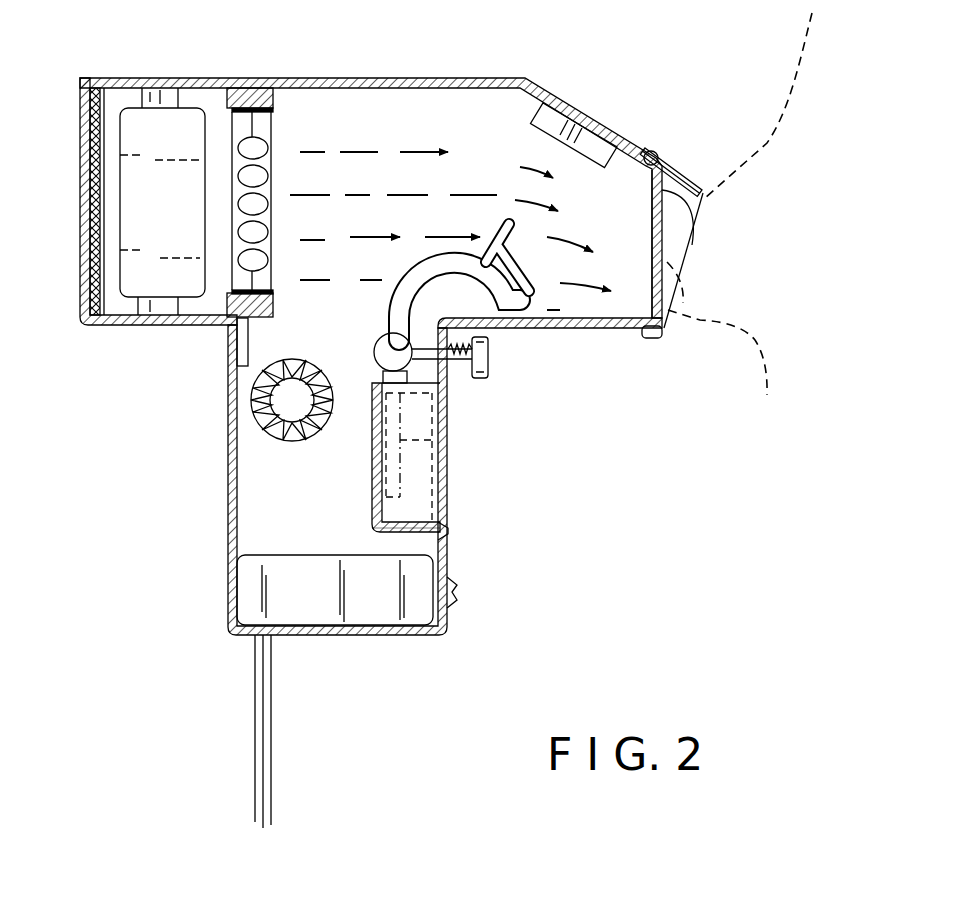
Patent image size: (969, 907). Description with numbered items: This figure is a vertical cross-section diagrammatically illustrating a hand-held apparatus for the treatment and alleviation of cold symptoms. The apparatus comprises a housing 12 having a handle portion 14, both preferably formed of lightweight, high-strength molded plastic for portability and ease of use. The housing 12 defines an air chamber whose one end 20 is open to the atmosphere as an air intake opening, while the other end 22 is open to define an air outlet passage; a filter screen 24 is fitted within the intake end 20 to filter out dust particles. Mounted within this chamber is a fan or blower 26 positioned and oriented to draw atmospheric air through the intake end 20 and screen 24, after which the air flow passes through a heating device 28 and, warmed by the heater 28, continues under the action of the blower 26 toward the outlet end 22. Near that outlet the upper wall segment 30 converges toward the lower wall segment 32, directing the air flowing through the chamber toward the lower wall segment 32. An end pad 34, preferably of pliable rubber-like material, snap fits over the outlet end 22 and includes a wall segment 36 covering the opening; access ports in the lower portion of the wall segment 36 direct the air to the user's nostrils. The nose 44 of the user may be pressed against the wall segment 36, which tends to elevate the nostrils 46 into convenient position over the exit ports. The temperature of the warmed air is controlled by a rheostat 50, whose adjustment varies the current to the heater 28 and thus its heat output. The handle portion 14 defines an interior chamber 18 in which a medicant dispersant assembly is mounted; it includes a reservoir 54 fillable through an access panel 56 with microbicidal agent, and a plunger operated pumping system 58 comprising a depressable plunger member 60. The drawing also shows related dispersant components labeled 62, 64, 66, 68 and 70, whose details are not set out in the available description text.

The housing 12 is at (440, 80).
The handle portion 14 is at (228, 508).
The interior chamber 18 is at (309, 490).
The end of chamber 20 is at (80, 130).
The other end of chamber 22 is at (705, 207).
The filter screen 24 is at (93, 187).
The fan or blower 26 is at (188, 128).
The heating device 28 is at (272, 118).
The upper wall segment 30 is at (588, 124).
The lower wall segment 32 is at (630, 330).
The end pad 34 is at (665, 162).
The wall segment 36 is at (655, 228).
The nose 44 is at (773, 148).
The nostrils 46 is at (687, 300).
The rheostat 50 is at (302, 358).
The reservoir 54 is at (450, 490).
The access panel 56 is at (447, 512).
The plunger operated pumping system 58 is at (490, 352).
The depressable plunger member 60 is at (480, 380).
The ball valve 62 is at (460, 365).
The reservoir 64 is at (437, 471).
The delivery tube 66 is at (433, 258).
The fork nozzle 68 is at (525, 243).
The outlet 70 is at (534, 298).